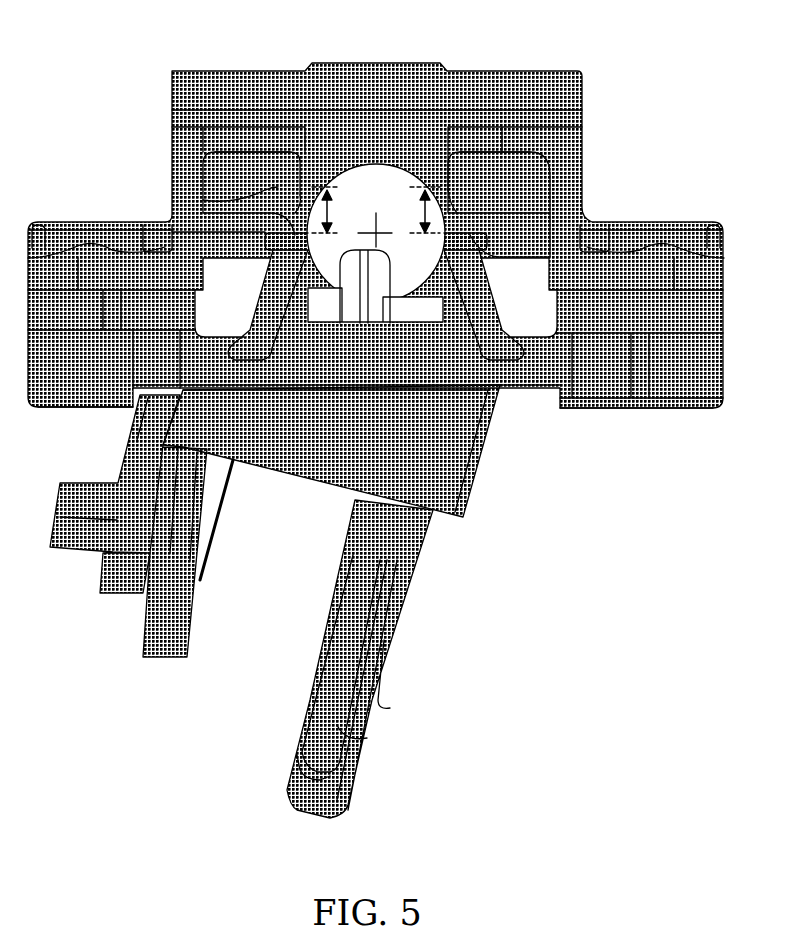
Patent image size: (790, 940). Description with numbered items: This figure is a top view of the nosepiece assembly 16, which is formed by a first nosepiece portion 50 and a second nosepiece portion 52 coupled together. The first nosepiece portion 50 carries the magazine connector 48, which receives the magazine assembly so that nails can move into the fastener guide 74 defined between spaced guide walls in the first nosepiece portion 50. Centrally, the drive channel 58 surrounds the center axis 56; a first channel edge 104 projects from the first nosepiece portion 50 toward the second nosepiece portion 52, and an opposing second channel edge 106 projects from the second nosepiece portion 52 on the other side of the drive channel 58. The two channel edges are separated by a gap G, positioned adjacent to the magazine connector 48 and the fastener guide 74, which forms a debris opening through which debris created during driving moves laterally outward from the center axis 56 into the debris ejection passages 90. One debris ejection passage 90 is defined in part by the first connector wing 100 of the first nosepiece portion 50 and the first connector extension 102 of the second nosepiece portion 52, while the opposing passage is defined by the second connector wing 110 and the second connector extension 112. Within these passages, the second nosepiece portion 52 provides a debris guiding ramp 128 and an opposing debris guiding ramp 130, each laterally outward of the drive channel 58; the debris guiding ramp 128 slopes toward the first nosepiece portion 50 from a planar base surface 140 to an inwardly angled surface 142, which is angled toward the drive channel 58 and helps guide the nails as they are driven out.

The nosepiece assembly 16 is at (692, 71).
The magazine connector 48 is at (486, 460).
The first nosepiece portion 50 is at (705, 408).
The second nosepiece portion 52 is at (550, 80).
The center axis 56 is at (376, 233).
The drive channel 58 is at (375, 163).
The fastener guide 74 is at (259, 622).
The debris ejection passage 90 is at (227, 321).
The first connector wing 100 is at (72, 407).
The first connector extension 102 is at (58, 222).
The first channel edge 104 is at (265, 192).
The second channel edge 106 is at (297, 197).
The second connector wing 110 is at (652, 408).
The second connector extension 112 is at (690, 227).
The debris guiding ramp 128 is at (228, 178).
The opposing debris guiding ramp 130 is at (523, 177).
The base surface 140 is at (257, 150).
The inwardly angled surface 142 is at (226, 233).
The gap G is at (327, 186).